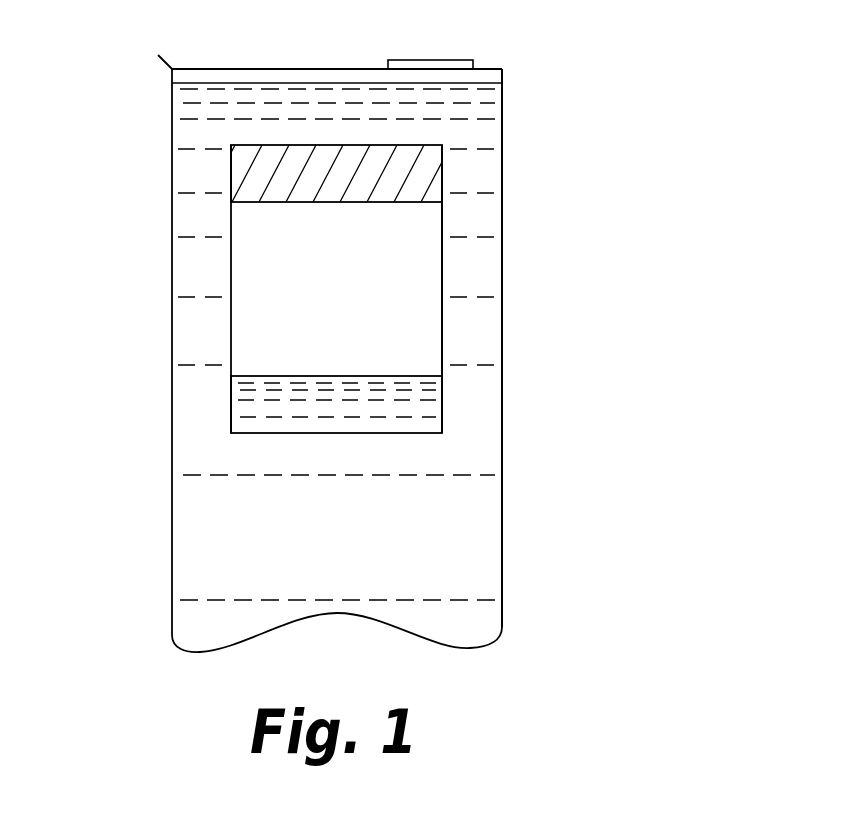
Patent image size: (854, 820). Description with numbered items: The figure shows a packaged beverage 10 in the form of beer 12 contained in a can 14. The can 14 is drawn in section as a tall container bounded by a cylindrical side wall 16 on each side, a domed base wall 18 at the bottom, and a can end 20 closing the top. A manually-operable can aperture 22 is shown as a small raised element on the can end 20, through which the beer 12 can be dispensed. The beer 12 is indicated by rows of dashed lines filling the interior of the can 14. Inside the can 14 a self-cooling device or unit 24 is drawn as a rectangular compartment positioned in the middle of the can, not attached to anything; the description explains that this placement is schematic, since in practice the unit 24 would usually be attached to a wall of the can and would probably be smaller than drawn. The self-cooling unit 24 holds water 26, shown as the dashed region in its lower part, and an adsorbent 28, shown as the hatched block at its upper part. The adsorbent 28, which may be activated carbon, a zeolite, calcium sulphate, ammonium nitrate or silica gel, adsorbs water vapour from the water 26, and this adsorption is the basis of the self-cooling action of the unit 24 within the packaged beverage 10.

The packaged beverage 10 is at (313, 346).
The beer 12 is at (478, 335).
The can 14 is at (504, 277).
The cylindrical side wall 16 is at (503, 202).
The domed base wall 18 is at (357, 614).
The can end 20 is at (503, 67).
The manually-operable can aperture 22 is at (447, 59).
The self-cooling unit 24 is at (416, 349).
The water 26 is at (429, 423).
The adsorbent 28 is at (405, 157).